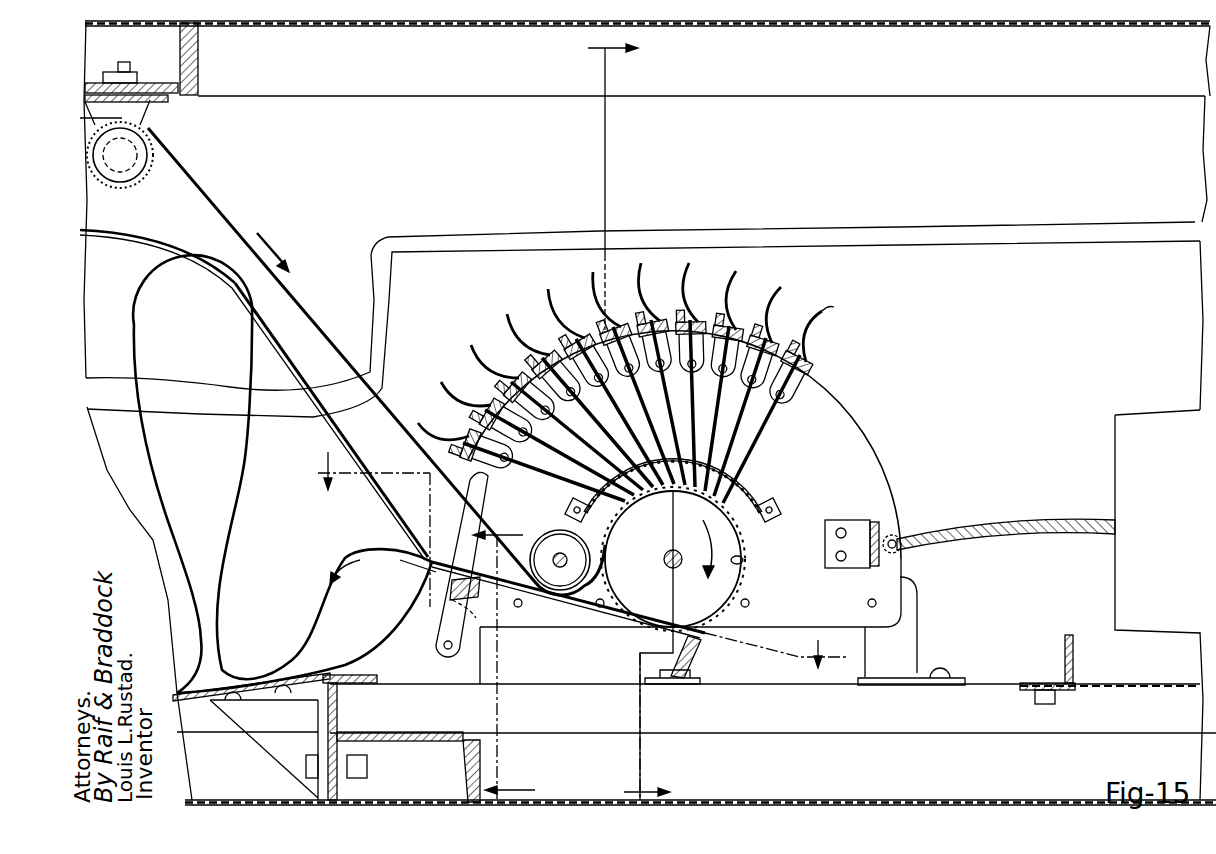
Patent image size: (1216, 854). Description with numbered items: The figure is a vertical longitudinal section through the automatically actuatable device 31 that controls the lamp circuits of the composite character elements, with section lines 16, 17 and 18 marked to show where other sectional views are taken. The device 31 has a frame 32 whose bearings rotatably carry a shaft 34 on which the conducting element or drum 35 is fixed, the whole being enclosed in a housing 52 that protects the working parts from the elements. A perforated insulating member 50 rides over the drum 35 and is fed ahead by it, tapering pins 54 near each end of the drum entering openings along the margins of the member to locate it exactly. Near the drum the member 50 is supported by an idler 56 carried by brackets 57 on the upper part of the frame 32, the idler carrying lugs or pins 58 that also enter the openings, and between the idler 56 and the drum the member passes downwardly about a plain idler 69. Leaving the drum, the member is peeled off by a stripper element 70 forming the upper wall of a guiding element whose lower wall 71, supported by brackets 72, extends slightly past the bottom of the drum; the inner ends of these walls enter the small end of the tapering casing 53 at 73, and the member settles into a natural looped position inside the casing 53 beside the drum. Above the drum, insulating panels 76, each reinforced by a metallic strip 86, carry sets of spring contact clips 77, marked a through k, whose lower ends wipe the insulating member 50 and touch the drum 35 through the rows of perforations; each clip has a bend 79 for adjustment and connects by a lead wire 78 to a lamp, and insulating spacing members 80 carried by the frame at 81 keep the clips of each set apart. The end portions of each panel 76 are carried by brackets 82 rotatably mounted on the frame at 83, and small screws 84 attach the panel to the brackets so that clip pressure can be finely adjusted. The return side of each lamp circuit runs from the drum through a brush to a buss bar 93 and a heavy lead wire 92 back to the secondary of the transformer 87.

The section line 16- 16 is at (641, 422).
The section line 17- 17 is at (582, 569).
The section line 18- 18 is at (510, 658).
The automatically actuatable device 31 is at (892, 442).
The frame 32 is at (918, 640).
The shaft 34 is at (667, 553).
The conducting element or drum 35 is at (746, 564).
The insulating member 50 is at (212, 203).
The housing 52 is at (896, 27).
The tapering casing 53 is at (142, 240).
The tapering pins 54 is at (748, 587).
The idler 56 is at (112, 182).
The brackets 57 is at (150, 119).
The lugs or pins 58 is at (150, 166).
The plain idler 69 is at (557, 531).
The stripper element 70 is at (476, 580).
The lower wall 71 is at (612, 622).
The brackets 72 is at (472, 603).
The entry of guiding element into casing 73 is at (415, 542).
The panel 76 is at (538, 375).
The spring contact clip 77 is at (760, 437).
The lead wire 78 is at (840, 320).
The bend 79 is at (805, 382).
The insulating contact clip spacing member 80 is at (748, 505).
The spacing member mounting 81 is at (567, 503).
The bracket 82 is at (487, 468).
The bracket axis 83 is at (664, 368).
The screw 84 is at (745, 330).
The metallic strip 86 is at (505, 404).
The transformer 87 is at (1148, 420).
The lead wire 92 is at (976, 528).
The buss bar 93 is at (862, 530).